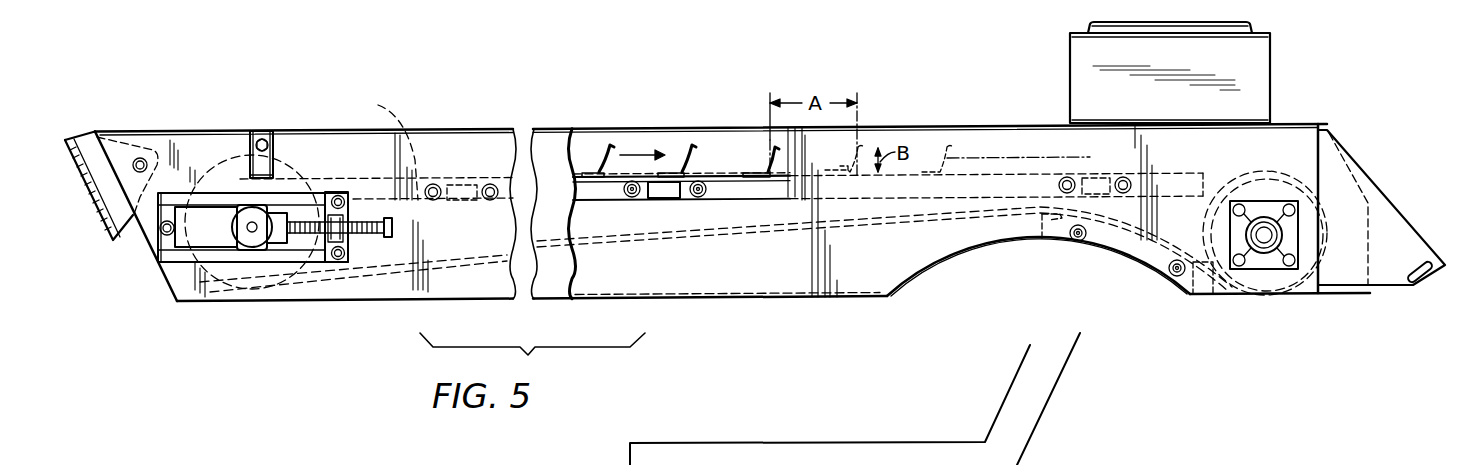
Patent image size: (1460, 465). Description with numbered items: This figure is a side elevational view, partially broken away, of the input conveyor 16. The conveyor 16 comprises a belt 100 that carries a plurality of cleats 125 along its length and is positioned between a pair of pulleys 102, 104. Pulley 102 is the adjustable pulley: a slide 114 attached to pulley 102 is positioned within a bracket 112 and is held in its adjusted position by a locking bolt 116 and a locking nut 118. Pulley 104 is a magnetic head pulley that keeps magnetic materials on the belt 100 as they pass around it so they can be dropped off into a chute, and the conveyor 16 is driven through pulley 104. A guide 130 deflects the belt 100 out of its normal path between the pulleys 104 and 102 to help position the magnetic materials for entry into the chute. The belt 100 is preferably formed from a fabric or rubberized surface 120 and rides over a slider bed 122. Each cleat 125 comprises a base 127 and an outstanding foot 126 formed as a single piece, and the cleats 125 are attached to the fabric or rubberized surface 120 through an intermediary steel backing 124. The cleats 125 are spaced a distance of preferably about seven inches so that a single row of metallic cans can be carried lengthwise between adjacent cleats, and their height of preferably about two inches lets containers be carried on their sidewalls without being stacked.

The input conveyor 16 is at (651, 103).
The belt 100 is at (690, 240).
The pulley 102 is at (263, 290).
The magnetic head pulley 104 is at (1270, 280).
The bracket 112 is at (174, 252).
The slide 114 is at (250, 235).
The locking bolt 116 is at (374, 233).
The locking nut 118 is at (337, 240).
The fabric or rubberized surface 120 is at (620, 155).
The slider bed 122 is at (375, 148).
The steel backing 124 is at (573, 162).
The cleats 125 is at (683, 150).
The outstanding foot 126 is at (604, 167).
The base 127 is at (589, 172).
The guide 130 is at (1147, 250).